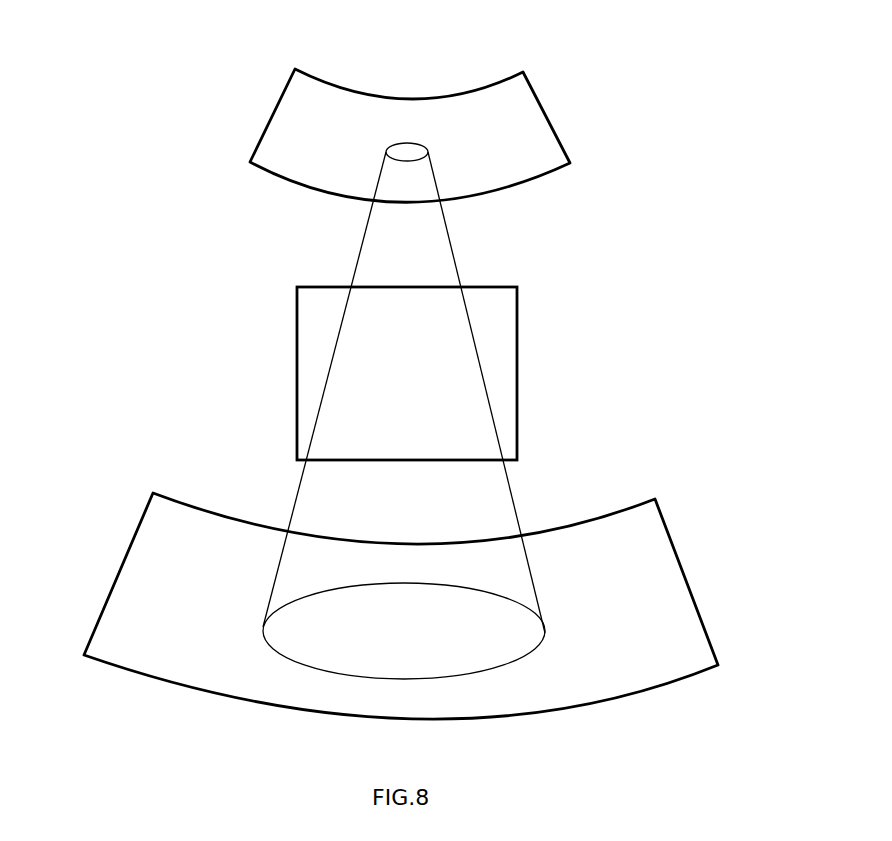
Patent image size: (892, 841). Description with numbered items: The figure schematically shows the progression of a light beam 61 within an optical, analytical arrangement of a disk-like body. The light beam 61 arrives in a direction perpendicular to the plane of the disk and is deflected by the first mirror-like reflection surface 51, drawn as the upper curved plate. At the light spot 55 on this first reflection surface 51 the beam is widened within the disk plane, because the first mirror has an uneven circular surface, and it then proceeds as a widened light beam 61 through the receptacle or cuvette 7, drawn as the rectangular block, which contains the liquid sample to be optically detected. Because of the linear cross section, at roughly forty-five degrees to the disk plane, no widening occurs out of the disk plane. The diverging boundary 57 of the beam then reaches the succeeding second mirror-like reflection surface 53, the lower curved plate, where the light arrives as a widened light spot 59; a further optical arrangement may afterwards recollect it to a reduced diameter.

The receptacle or cuvette 7 is at (502, 363).
The first mirror-like reflection surface 51 is at (528, 122).
The second mirror-like reflection surface 53 is at (663, 577).
The light spot 55 is at (408, 150).
The beam cone boundary 57 is at (513, 498).
The widened light spot 59 is at (499, 653).
The light beam 61 is at (433, 239).